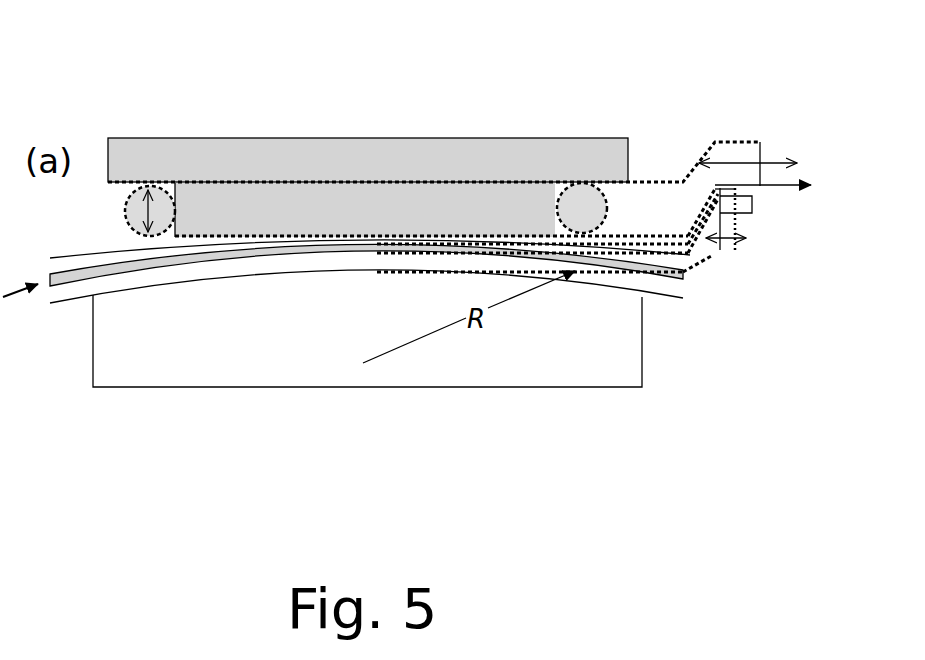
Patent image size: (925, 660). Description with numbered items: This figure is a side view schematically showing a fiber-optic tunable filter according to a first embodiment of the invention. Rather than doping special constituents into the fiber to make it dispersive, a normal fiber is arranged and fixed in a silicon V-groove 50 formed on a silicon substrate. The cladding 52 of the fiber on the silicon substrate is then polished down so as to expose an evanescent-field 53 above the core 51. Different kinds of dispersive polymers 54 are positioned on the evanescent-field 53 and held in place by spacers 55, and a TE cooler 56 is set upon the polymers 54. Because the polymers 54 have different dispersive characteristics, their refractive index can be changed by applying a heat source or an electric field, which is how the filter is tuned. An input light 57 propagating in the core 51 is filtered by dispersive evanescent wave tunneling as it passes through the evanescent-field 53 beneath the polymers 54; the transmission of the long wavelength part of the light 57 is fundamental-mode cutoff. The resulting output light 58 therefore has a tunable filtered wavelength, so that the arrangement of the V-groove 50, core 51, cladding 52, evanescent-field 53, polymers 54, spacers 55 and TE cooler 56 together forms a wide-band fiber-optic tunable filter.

The silicon V-groove 50 is at (601, 355).
The core 51 is at (268, 253).
The cladding 52 is at (143, 278).
The evanescent-field 53 is at (372, 237).
The dispersive polymers 54 is at (219, 198).
The spacers 55 is at (127, 203).
The TE cooler 56 is at (507, 150).
The input light 57 is at (20, 317).
The output light 58 is at (690, 280).